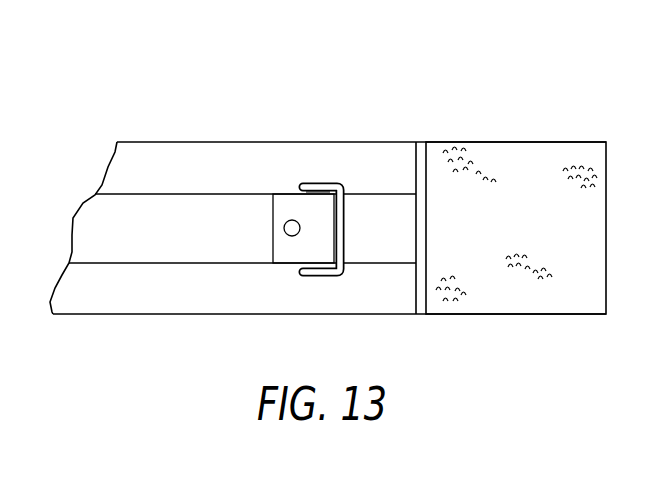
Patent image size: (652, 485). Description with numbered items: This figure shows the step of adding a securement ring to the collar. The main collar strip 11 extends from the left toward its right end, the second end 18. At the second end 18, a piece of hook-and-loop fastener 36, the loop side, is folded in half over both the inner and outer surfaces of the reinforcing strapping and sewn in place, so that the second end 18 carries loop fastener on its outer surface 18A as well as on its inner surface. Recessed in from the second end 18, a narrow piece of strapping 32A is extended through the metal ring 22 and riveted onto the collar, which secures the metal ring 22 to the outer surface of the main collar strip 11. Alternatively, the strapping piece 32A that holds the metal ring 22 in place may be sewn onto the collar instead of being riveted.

The main collar strip 11 is at (202, 101).
The narrow piece of strapping 32A is at (285, 192).
The metal ring 22 is at (328, 183).
The second end 18 is at (542, 320).
The outer surface 18A is at (548, 235).
The piece of hook-and-loop fastener 36 is at (567, 152).